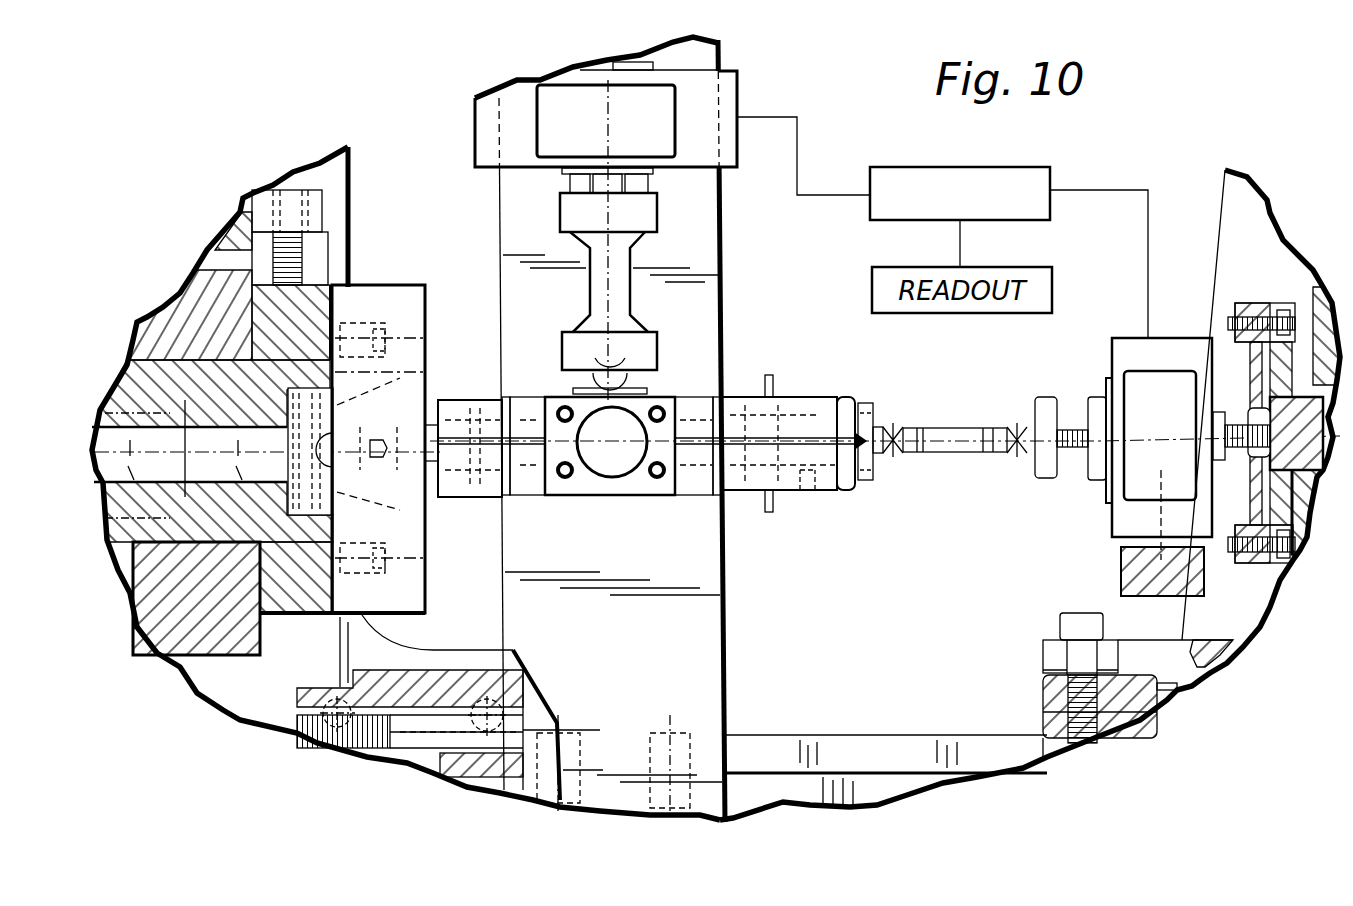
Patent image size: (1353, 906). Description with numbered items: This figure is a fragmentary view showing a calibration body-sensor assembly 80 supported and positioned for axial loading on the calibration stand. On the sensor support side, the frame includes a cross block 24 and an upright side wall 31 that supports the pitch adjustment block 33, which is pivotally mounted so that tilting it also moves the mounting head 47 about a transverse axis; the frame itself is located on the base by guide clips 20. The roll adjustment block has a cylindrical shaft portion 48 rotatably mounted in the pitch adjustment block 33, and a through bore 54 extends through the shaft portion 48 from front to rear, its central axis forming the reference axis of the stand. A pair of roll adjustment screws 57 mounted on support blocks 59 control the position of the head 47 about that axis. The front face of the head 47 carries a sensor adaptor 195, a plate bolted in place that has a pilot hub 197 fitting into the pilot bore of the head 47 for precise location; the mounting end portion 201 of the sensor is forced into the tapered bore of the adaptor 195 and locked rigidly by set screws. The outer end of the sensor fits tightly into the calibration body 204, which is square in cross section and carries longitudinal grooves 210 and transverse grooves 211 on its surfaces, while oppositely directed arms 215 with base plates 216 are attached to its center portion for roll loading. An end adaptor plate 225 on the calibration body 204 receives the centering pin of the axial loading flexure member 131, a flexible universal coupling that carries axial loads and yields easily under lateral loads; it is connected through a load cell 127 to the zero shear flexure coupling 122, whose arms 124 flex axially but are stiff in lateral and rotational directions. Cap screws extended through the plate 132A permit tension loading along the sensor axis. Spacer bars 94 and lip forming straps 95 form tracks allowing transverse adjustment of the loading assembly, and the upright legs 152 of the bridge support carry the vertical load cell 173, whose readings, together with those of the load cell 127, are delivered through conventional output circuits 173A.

The guide clips 20 is at (867, 733).
The cross block 24 is at (520, 667).
The upright side wall 31 is at (395, 653).
The pitch adjustment block 33 is at (262, 641).
The mounting head 47 is at (322, 273).
The cylindrical shaft portion 48 is at (135, 545).
The through bore 54 is at (145, 430).
The roll adjustment screws 57 is at (300, 248).
The support blocks 59 is at (317, 192).
The calibration body-sensor assembly 80 is at (787, 383).
The cross spacer bars 94 is at (1045, 723).
The lip forming strap 95 is at (1045, 690).
The zero shear flexure coupling 122 is at (1267, 303).
The arms 124 is at (1228, 535).
The load cell 127 is at (1112, 360).
The axial loading flexure member 131 is at (958, 427).
The plate 132A is at (875, 468).
The upright legs 152 is at (722, 665).
The load cell 173 is at (737, 78).
The output circuits 173A is at (1052, 168).
The sensor adaptor 195 is at (372, 283).
The pilot hub 197 is at (425, 515).
The mounting end portion 201 is at (405, 425).
The calibration body 204 is at (798, 398).
The longitudinal grooves 210 is at (805, 485).
The transverse grooves 211 is at (508, 490).
The arms 215 is at (633, 477).
The base plates 216 is at (664, 392).
The end adaptor plate 225 is at (850, 392).